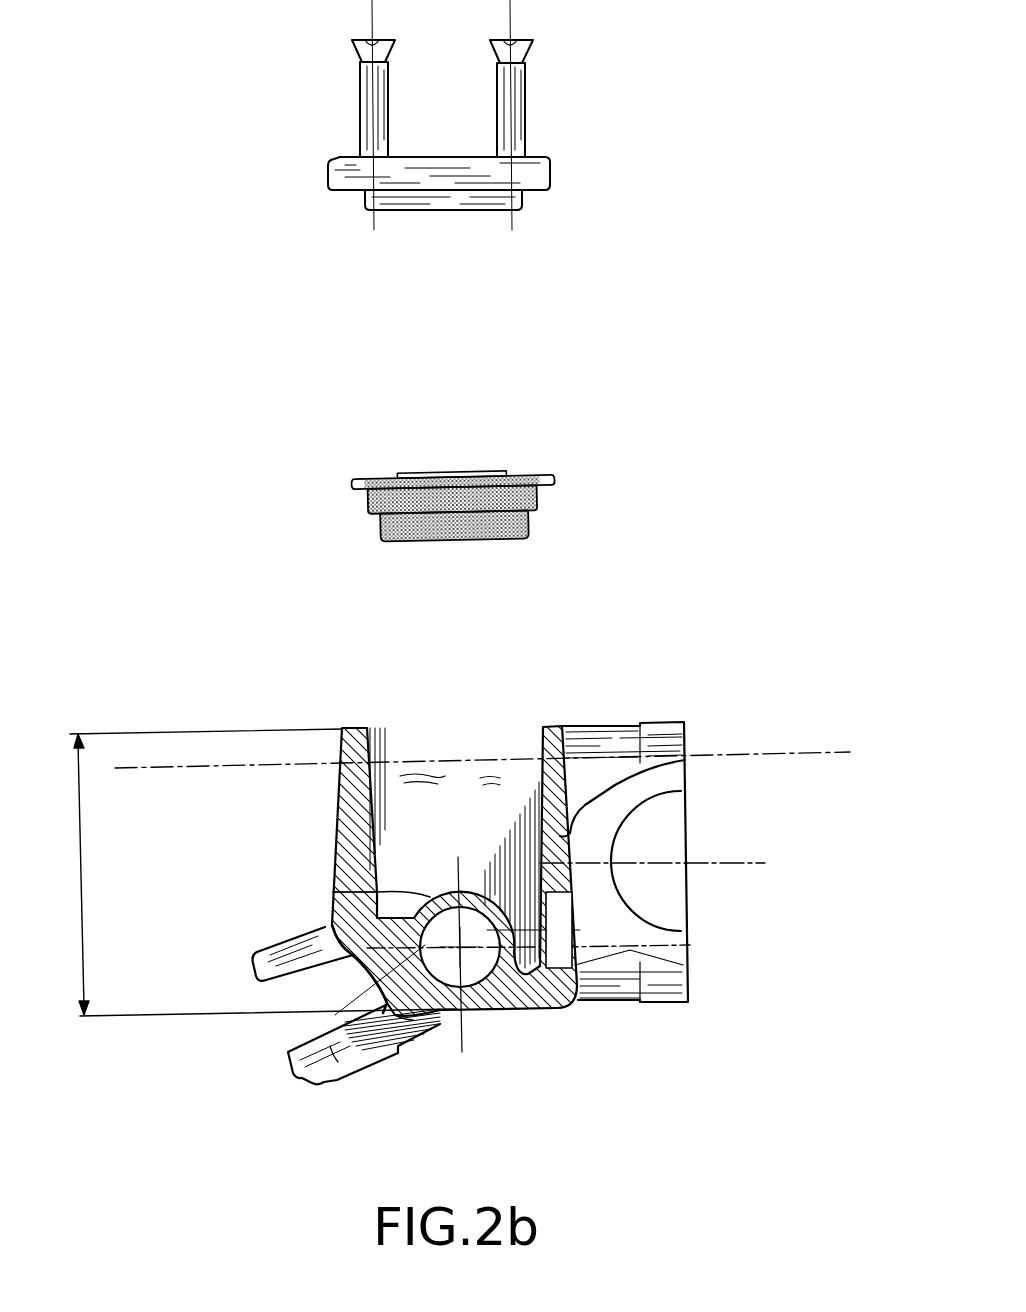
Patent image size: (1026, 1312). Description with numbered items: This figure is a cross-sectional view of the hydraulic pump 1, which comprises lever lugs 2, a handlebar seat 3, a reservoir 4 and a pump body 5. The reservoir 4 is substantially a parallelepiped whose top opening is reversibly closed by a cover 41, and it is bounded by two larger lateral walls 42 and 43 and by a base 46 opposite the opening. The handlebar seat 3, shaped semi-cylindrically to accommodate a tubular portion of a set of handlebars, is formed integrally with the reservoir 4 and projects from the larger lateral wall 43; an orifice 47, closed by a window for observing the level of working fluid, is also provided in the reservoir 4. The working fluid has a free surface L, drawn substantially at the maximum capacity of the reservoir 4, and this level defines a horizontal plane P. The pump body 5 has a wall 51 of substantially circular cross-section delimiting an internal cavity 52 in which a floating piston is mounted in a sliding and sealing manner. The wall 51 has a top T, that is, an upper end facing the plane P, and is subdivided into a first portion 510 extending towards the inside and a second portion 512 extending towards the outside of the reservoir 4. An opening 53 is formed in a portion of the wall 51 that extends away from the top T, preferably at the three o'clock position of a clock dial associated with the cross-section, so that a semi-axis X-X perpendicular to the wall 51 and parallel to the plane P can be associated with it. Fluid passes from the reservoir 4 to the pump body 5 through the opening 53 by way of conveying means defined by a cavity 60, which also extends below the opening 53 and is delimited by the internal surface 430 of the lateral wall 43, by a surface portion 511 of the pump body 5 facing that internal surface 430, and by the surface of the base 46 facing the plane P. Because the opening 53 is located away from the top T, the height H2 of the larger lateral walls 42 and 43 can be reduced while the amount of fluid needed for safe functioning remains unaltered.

The cover 41 is at (618, 122).
The pump 1 is at (242, 643).
The reservoir 4 is at (657, 657).
The internal surface 430 is at (540, 782).
The larger lateral wall 43 is at (564, 786).
The larger lateral wall 42 is at (338, 813).
The surface portion 511 is at (452, 900).
The first portion 510 is at (337, 892).
The orifice 47 is at (574, 911).
The lever lugs 2 is at (255, 962).
The wall 51 is at (380, 950).
The handlebar seat 3 is at (680, 990).
The cavity 60 is at (548, 1010).
The second portion 512 is at (350, 1012).
The opening 53 is at (528, 1009).
The pump body 5 is at (467, 1036).
The internal cavity 52 is at (475, 965).
The base 46 is at (408, 1052).
The free surface L is at (448, 756).
The top T is at (461, 895).
The plane P is at (735, 750).
The semi-axis X-X is at (703, 947).
The height H2 is at (241, 872).